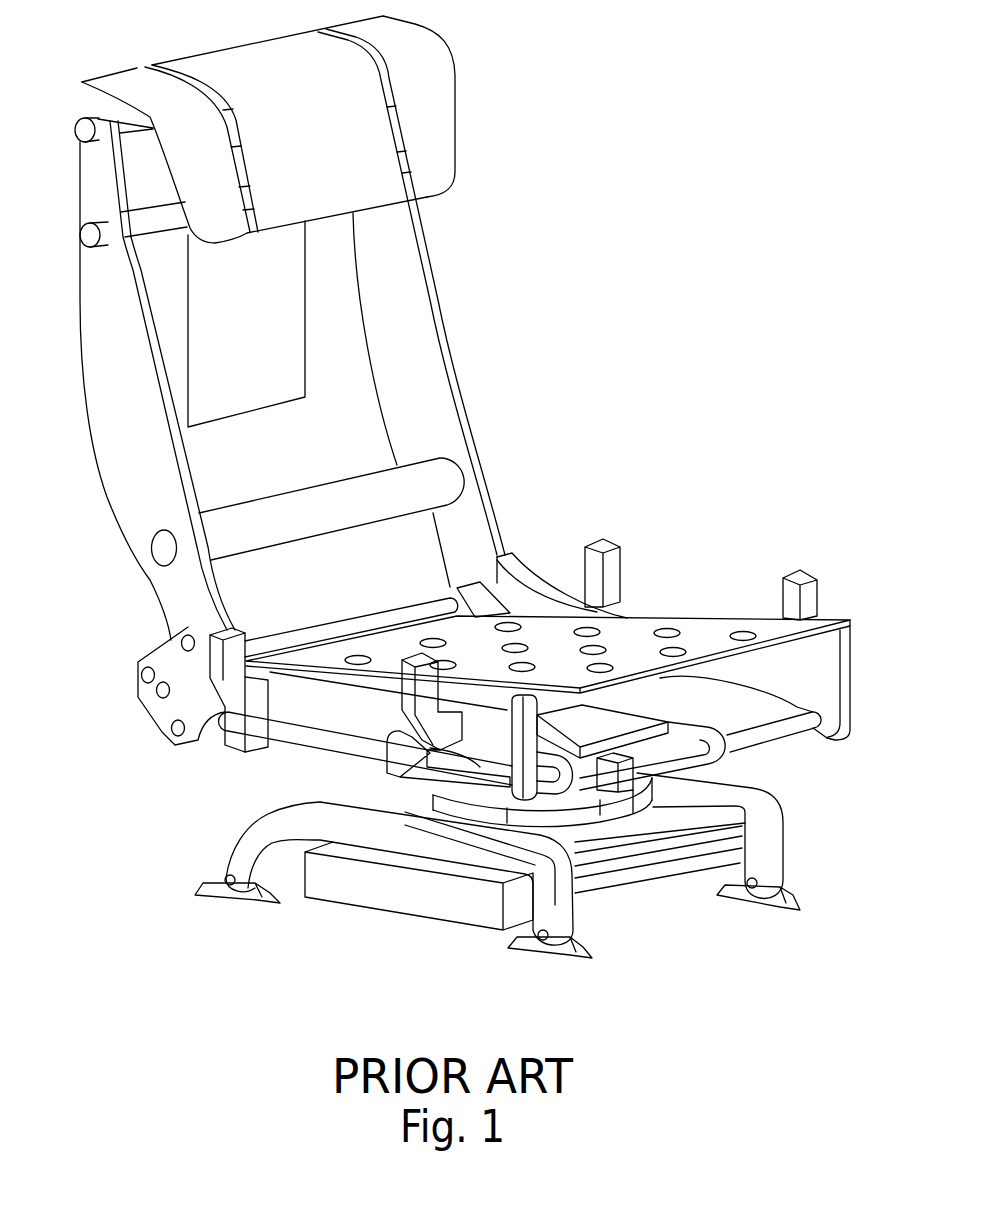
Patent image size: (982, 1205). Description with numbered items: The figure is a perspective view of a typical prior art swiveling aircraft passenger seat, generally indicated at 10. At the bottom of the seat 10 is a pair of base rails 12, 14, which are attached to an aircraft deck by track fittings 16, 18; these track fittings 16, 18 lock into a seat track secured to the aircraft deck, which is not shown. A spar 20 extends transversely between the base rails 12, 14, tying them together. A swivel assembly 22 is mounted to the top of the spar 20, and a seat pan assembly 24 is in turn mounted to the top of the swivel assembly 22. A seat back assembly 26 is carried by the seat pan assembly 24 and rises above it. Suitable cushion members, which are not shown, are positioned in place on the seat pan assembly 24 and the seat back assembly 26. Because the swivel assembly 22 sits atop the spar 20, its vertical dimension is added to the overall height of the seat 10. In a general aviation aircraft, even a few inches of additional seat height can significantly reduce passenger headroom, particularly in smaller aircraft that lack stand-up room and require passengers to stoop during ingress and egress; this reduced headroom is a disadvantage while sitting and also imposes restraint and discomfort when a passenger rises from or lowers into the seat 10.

The swiveling aircraft passenger seat 10 is at (697, 250).
The base rail 12 is at (247, 848).
The base rail 14 is at (785, 857).
The track fitting 16 is at (513, 957).
The track fitting 18 is at (782, 913).
The spar 20 is at (615, 830).
The swivel assembly 22 is at (647, 798).
The seat pan assembly 24 is at (650, 628).
The seat back assembly 26 is at (422, 360).